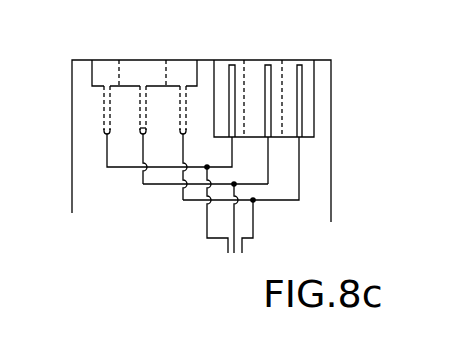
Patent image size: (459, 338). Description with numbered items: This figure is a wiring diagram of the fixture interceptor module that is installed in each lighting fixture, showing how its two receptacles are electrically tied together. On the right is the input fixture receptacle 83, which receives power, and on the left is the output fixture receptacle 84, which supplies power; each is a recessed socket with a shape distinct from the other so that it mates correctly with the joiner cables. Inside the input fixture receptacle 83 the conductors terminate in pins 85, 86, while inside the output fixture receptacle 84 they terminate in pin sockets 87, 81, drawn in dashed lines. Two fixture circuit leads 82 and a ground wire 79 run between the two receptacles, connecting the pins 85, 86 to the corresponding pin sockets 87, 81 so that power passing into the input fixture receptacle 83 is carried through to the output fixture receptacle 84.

The ground wire 79 is at (158, 188).
The pin socket 81 is at (140, 140).
The fixture circuit leads 82 is at (117, 169).
The input fixture receptacle 83 is at (307, 83).
The output fixture receptacle 84 is at (147, 68).
The pins 85 is at (298, 66).
The pin 86 is at (272, 125).
The pin sockets 87 is at (180, 102).